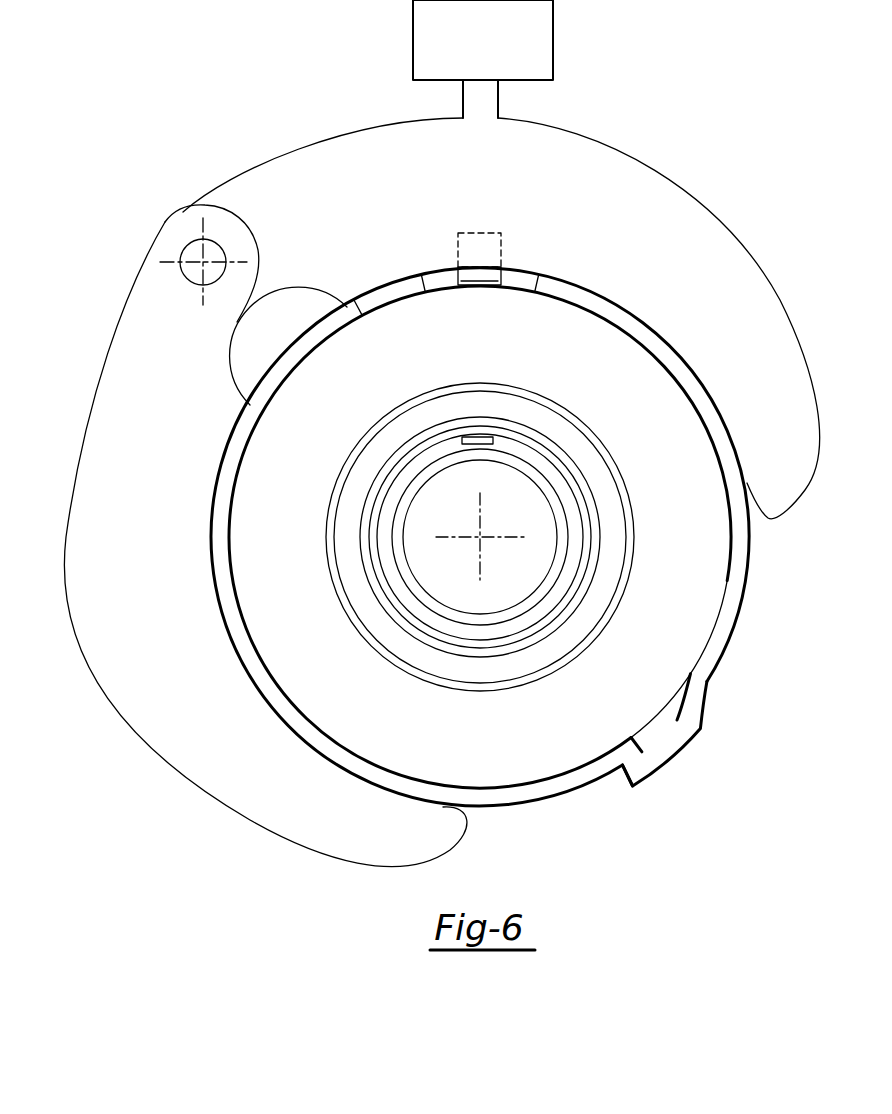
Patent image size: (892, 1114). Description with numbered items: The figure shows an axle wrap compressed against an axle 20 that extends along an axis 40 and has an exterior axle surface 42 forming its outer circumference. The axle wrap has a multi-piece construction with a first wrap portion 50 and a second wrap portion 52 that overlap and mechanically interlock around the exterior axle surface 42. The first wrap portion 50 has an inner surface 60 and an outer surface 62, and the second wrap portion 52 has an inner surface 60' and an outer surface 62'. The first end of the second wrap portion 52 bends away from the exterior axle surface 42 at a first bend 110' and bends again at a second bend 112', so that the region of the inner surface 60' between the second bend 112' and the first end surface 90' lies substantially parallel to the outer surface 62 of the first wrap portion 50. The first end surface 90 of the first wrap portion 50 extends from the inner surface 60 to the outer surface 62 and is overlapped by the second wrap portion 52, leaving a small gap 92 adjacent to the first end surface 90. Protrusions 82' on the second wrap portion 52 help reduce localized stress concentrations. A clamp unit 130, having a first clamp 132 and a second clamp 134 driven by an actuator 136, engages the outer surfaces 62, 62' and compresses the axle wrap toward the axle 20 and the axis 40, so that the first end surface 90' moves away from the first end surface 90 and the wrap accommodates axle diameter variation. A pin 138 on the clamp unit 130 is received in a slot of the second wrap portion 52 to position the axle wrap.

The actuator 136 is at (468, 56).
The first clamp 132 is at (483, 176).
The clamp unit 130 is at (165, 222).
The second clamp 134 is at (96, 531).
The first wrap portion 50 is at (273, 347).
The axle 20 is at (465, 537).
The exterior axle surface 42 is at (465, 537).
The second wrap portion 52 is at (597, 290).
The outer surface 62 is at (238, 725).
The outer surface 62' is at (686, 305).
The inner surface 60 is at (461, 537).
The inner surface 60' is at (611, 381).
The protrusions 82' is at (465, 261).
The pin 138 is at (486, 279).
The first bend 110' is at (704, 719).
The second bend 112' is at (732, 710).
The first end surface 90 is at (637, 702).
The first end surface 90' is at (653, 816).
The gap 92 is at (664, 725).
The axis 40 is at (480, 537).